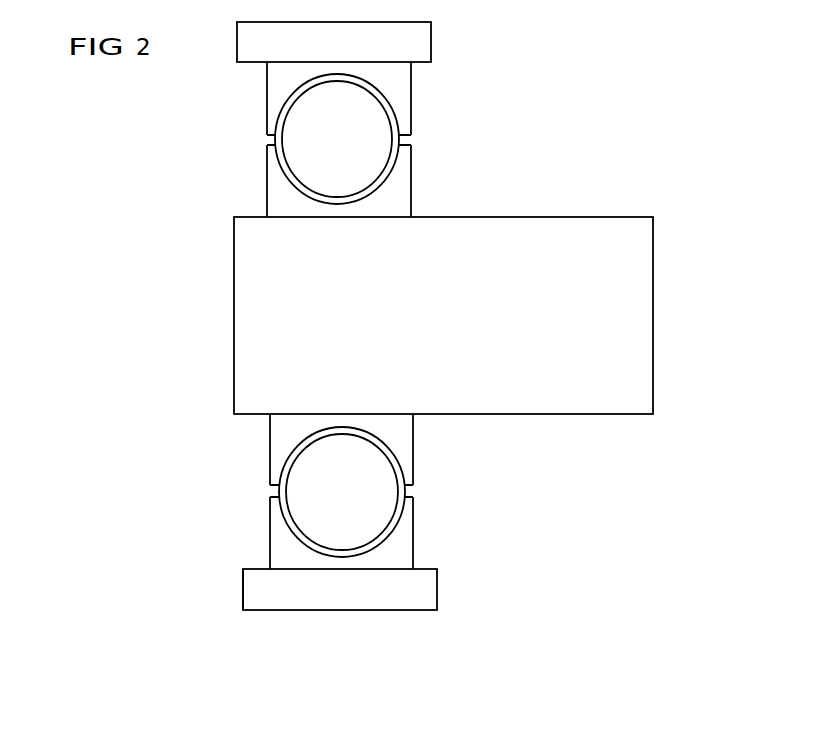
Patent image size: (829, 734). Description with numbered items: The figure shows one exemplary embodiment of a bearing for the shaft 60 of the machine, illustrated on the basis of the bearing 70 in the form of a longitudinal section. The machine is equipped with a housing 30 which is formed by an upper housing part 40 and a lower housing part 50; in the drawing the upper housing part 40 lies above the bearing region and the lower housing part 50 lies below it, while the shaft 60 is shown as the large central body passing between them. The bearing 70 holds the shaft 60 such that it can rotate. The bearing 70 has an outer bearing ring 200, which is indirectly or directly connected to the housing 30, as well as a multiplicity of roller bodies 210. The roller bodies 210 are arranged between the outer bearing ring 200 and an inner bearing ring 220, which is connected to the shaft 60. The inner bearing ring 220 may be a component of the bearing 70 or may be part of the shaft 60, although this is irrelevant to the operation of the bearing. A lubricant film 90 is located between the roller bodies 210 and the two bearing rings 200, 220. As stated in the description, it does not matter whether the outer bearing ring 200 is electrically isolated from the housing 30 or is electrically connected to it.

The housing 30 is at (243, 590).
The upper housing part 40 is at (417, 43).
The lower housing part 50 is at (422, 588).
The shaft 60 is at (642, 317).
The bearing 70 is at (437, 118).
The lubricant film 90 is at (398, 153).
The outer bearing ring 200 is at (393, 90).
The roller bodies 210 is at (298, 140).
The inner bearing ring 220 is at (393, 192).